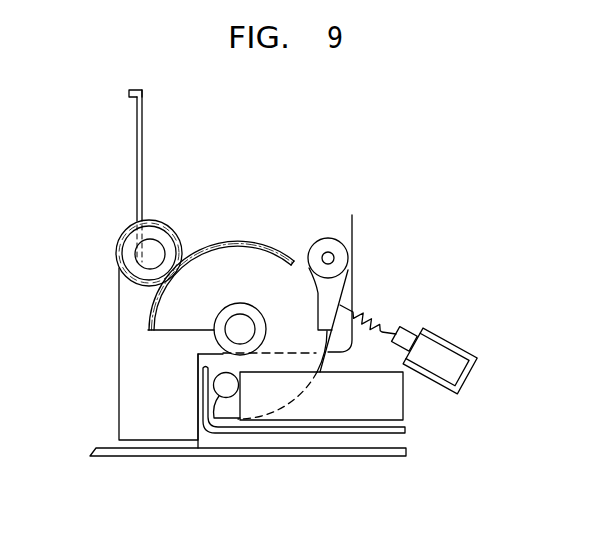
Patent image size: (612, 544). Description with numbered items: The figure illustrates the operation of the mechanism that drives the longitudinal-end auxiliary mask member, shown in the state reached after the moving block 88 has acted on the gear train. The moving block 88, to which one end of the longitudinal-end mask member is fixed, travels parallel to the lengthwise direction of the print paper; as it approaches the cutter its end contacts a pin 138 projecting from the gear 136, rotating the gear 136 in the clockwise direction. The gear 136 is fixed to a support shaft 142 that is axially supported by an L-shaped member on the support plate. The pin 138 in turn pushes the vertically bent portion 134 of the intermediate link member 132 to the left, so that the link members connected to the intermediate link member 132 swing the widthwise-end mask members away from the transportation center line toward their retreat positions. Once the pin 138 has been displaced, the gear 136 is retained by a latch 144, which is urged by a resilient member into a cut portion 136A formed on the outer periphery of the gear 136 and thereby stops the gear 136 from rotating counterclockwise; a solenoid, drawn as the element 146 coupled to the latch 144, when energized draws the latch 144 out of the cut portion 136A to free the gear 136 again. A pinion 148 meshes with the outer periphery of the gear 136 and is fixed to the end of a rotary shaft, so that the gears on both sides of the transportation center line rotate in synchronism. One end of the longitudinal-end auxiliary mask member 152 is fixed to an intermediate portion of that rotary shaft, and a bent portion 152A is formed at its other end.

The moving block 88 is at (403, 373).
The intermediate link member 132 is at (325, 430).
The vertically bent portion 134 is at (200, 409).
The gear 136 is at (233, 248).
The cut portion 136A is at (289, 260).
The pin 138 is at (216, 383).
The support shaft 142 is at (247, 321).
The latch 144 is at (352, 284).
The damper 146 is at (446, 348).
The pinion 148 is at (172, 235).
The longitudinal-end auxiliary mask member 152 is at (144, 121).
The bent portion 152A is at (138, 91).